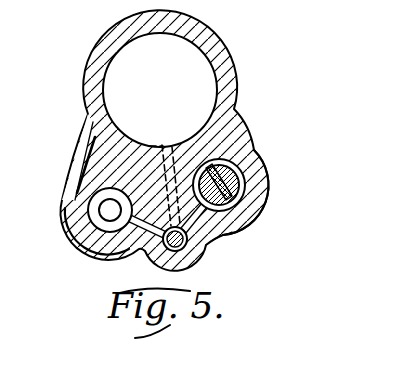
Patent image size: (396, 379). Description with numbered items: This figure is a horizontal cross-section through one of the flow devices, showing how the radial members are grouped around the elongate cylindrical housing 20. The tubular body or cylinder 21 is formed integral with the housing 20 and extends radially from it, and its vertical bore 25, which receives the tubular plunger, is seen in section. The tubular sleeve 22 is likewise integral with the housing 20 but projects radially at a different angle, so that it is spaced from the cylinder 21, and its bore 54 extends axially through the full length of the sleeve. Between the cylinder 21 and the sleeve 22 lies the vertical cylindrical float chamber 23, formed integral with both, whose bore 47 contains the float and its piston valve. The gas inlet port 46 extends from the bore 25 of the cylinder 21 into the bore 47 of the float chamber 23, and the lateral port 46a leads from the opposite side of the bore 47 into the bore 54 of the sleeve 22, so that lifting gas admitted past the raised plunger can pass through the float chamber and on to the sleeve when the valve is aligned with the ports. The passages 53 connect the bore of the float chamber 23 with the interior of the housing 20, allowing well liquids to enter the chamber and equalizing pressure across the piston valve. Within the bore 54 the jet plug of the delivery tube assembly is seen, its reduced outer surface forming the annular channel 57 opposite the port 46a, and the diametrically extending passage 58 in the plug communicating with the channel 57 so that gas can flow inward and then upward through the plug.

The housing 20 is at (197, 27).
The cylinder 21 is at (70, 197).
The sleeve 22 is at (262, 207).
The float chamber 23 is at (148, 264).
The bore 25 is at (90, 220).
The inlet port 46 is at (98, 260).
The lateral port 46a is at (204, 235).
The bore 47 is at (203, 257).
The passages 53 is at (141, 130).
The bore 54 is at (245, 178).
The annular channel 57 is at (224, 160).
The diametrically extending passage 58 is at (226, 188).